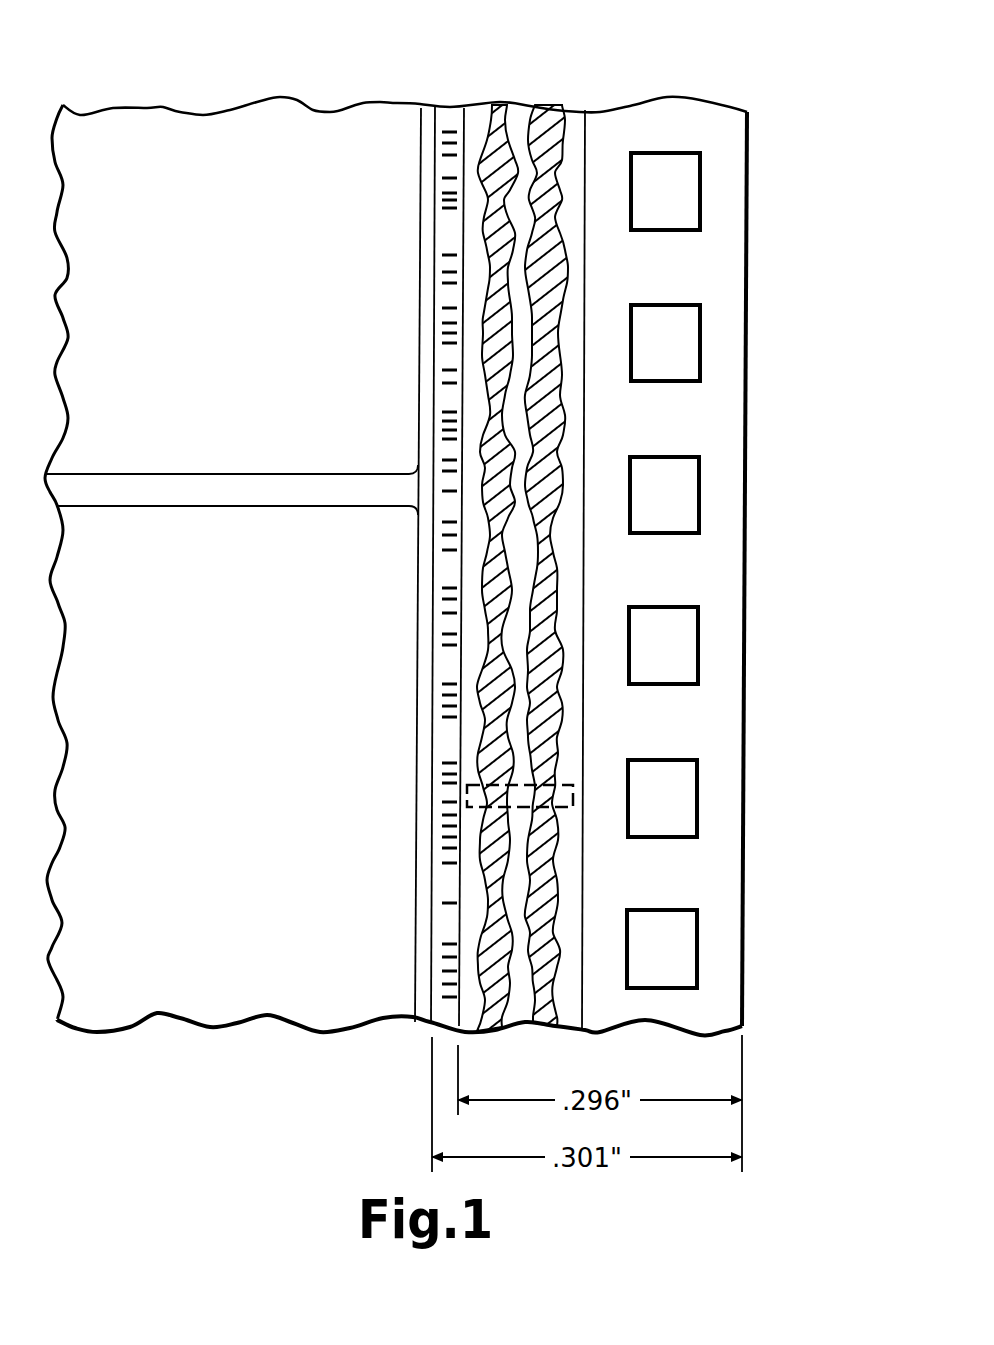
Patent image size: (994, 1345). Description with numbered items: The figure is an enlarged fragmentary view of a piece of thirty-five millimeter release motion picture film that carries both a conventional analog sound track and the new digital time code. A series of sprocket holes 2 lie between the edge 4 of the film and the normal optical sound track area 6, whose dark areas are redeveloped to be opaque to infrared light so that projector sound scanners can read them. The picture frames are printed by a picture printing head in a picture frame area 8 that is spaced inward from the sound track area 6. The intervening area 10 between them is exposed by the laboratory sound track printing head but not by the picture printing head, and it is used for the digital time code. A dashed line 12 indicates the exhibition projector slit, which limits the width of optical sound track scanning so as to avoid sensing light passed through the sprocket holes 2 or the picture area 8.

The sprocket holes 2 is at (700, 190).
The edge of the film 4 is at (776, 150).
The optical sound track area 6 is at (585, 88).
The picture frame area 8 is at (65, 88).
The intervening area 10 is at (438, 88).
The dashed line indicating projector slit 12 is at (575, 785).